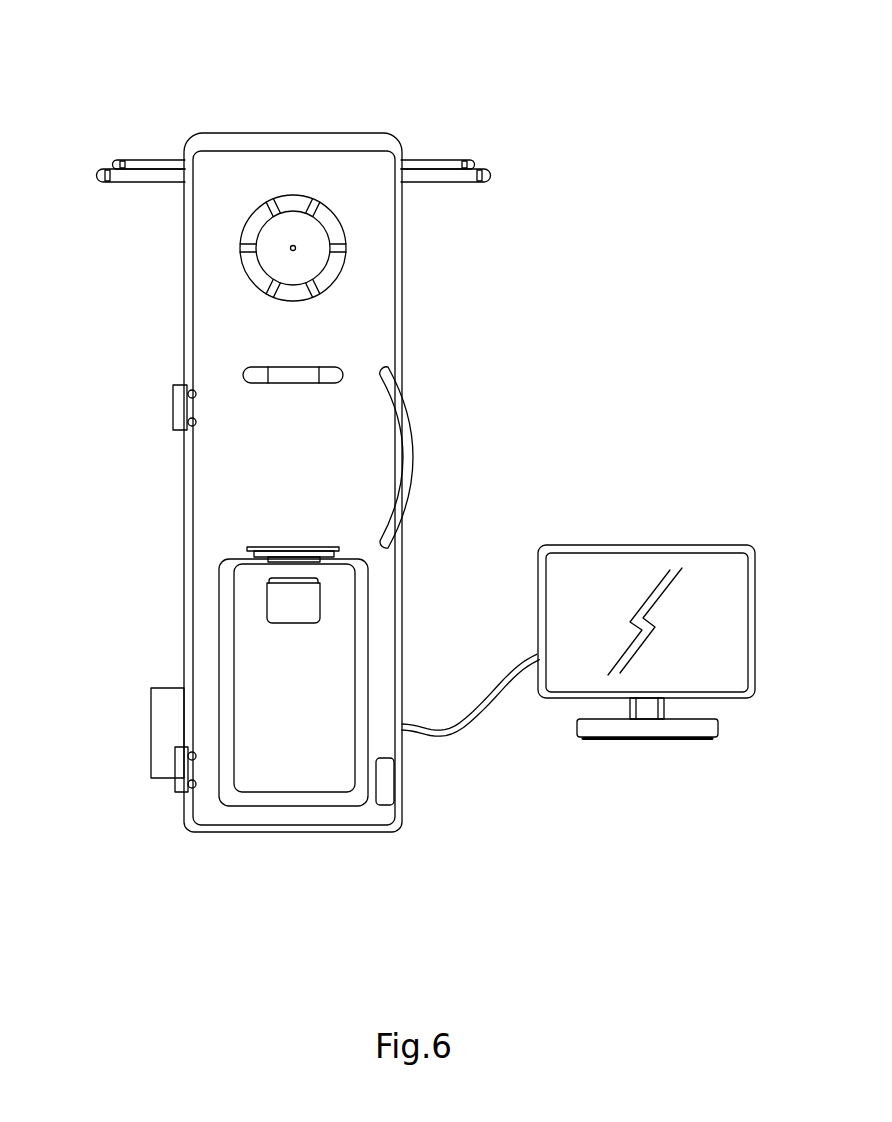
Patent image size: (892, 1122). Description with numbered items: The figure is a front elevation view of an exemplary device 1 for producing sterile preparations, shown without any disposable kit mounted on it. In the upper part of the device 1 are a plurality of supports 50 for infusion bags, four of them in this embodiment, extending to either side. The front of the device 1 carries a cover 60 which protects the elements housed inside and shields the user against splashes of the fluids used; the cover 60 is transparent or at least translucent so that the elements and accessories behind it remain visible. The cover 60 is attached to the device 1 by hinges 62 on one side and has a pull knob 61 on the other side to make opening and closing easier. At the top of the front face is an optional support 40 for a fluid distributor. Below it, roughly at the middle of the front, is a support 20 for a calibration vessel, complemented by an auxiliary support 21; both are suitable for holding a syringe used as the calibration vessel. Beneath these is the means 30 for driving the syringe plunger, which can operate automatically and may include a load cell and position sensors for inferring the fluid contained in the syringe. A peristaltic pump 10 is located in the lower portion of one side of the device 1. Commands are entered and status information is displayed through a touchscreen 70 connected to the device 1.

The device for producing sterile preparations 1 is at (310, 112).
The peristaltic pump 10 is at (168, 731).
The support for a calibration vessel 20 is at (258, 366).
The auxiliary support for the calibration vessel 21 is at (278, 546).
The means for driving the plunger 30 is at (282, 601).
The support for a fluid distributor 40 is at (255, 267).
The supports for infusion bags 50 is at (141, 178).
The cover 60 is at (375, 303).
The pull knob 61 is at (408, 459).
The hinges 62 is at (173, 407).
The touchscreen 70 is at (700, 667).